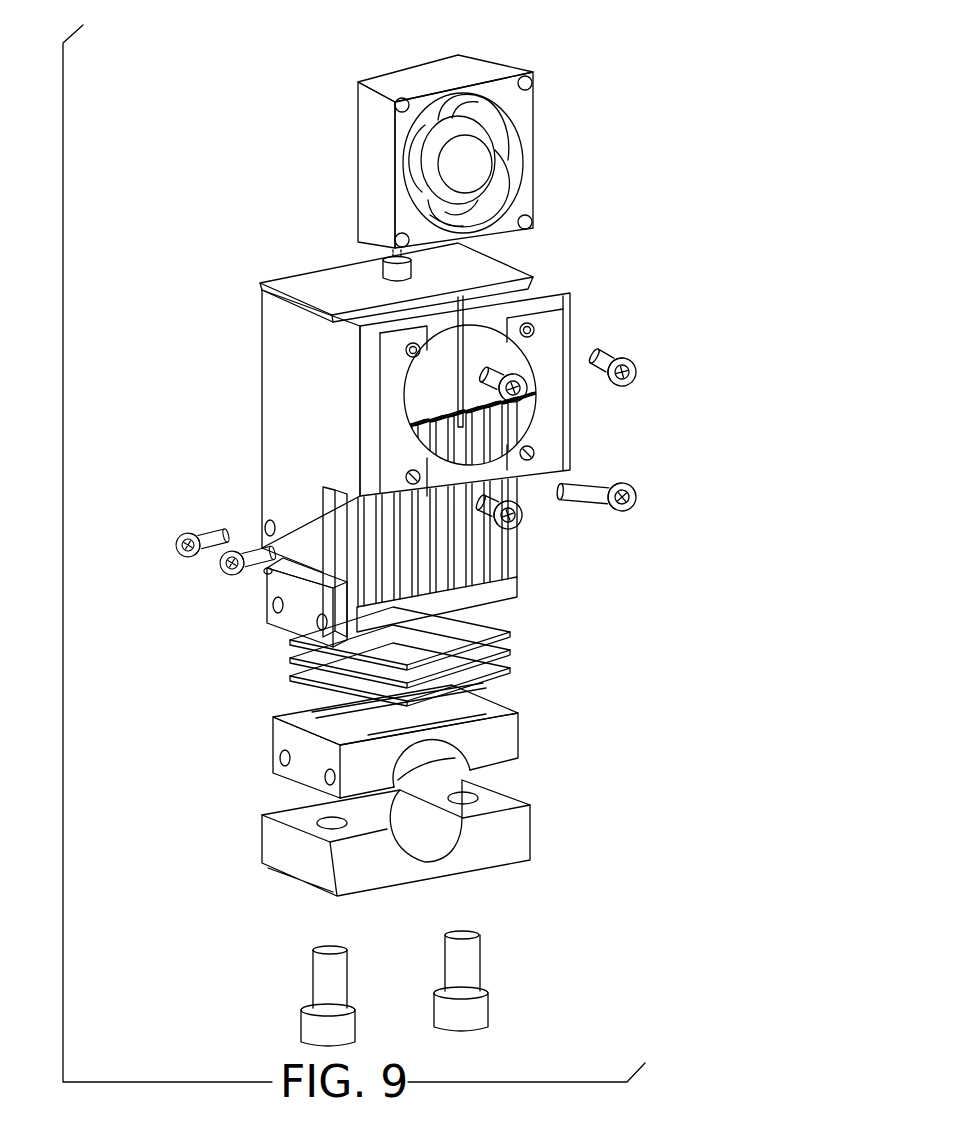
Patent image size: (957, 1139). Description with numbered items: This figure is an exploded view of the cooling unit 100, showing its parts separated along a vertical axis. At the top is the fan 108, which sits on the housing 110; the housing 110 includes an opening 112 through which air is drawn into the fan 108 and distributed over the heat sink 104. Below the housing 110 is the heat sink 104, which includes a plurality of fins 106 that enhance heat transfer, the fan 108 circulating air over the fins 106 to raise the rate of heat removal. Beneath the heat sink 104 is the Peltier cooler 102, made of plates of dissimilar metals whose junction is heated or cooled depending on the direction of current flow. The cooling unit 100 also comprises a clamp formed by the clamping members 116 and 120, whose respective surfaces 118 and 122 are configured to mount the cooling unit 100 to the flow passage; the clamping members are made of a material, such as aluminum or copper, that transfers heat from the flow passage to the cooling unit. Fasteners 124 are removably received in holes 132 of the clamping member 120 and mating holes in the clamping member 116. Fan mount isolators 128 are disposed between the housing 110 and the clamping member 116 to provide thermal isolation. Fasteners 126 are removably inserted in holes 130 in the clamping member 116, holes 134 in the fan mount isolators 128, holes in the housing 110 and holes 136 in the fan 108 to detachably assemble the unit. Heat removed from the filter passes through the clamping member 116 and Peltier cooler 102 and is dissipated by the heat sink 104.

The cooling unit 100 is at (700, 121).
The Peltier cooler 102 is at (523, 645).
The heat sink 104 is at (533, 573).
The fins 106 is at (348, 508).
The fan 108 is at (537, 102).
The housing 110 is at (572, 310).
The opening 112 is at (413, 400).
The clamping member 116 is at (522, 738).
The surface 118 is at (467, 760).
The clamping member 120 is at (531, 830).
The surface 122 is at (437, 845).
The fasteners 124 is at (484, 1010).
The fasteners 126 is at (637, 372).
The fan mount isolators 128 is at (298, 620).
The holes 130 is at (279, 759).
The holes 132 is at (318, 818).
The holes 134 is at (273, 607).
The holes 136 is at (533, 220).